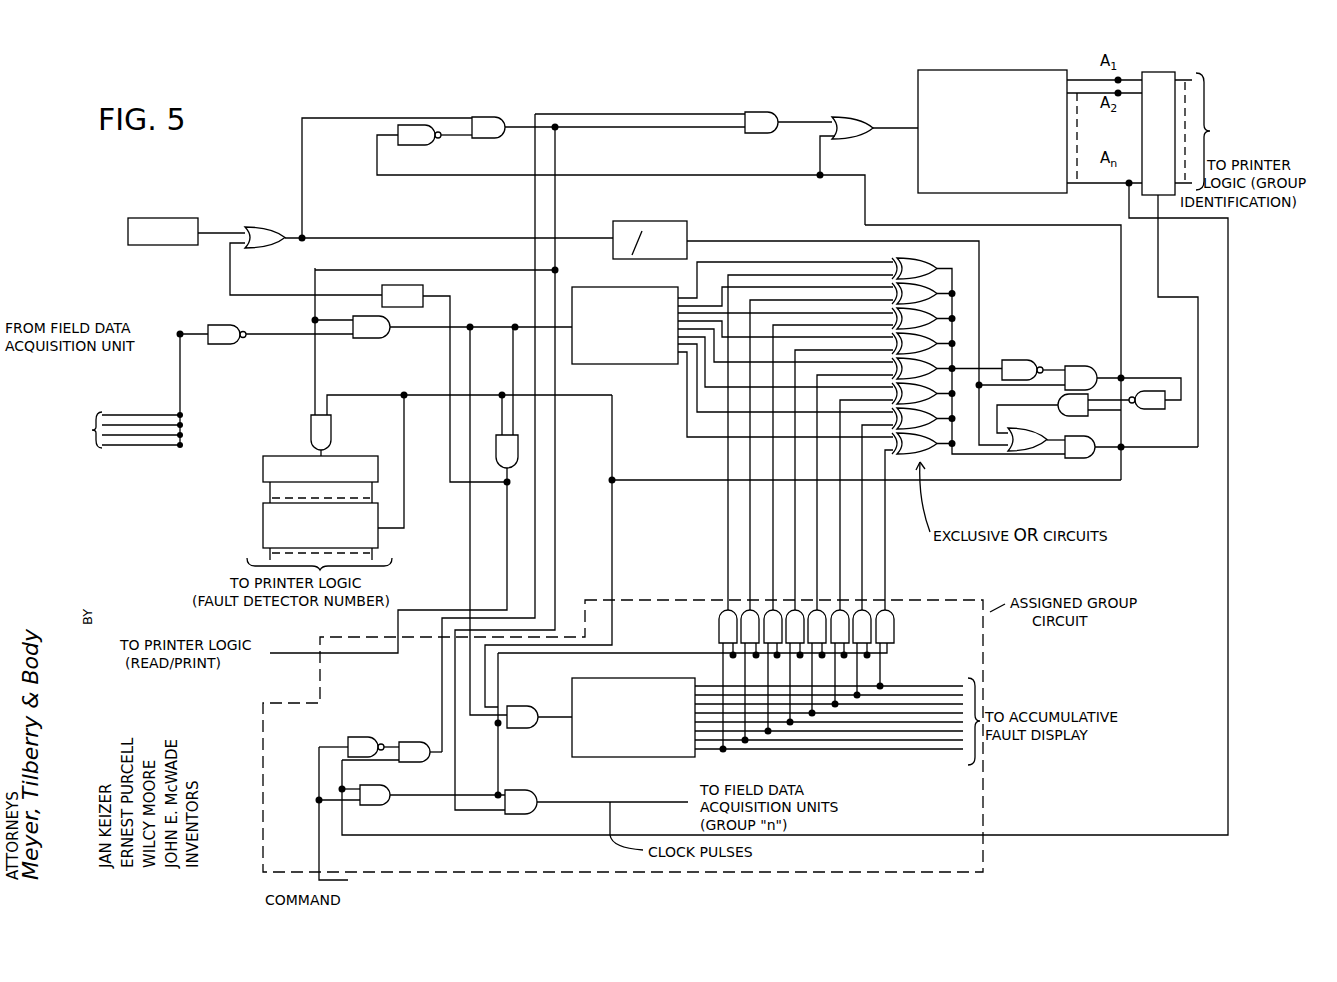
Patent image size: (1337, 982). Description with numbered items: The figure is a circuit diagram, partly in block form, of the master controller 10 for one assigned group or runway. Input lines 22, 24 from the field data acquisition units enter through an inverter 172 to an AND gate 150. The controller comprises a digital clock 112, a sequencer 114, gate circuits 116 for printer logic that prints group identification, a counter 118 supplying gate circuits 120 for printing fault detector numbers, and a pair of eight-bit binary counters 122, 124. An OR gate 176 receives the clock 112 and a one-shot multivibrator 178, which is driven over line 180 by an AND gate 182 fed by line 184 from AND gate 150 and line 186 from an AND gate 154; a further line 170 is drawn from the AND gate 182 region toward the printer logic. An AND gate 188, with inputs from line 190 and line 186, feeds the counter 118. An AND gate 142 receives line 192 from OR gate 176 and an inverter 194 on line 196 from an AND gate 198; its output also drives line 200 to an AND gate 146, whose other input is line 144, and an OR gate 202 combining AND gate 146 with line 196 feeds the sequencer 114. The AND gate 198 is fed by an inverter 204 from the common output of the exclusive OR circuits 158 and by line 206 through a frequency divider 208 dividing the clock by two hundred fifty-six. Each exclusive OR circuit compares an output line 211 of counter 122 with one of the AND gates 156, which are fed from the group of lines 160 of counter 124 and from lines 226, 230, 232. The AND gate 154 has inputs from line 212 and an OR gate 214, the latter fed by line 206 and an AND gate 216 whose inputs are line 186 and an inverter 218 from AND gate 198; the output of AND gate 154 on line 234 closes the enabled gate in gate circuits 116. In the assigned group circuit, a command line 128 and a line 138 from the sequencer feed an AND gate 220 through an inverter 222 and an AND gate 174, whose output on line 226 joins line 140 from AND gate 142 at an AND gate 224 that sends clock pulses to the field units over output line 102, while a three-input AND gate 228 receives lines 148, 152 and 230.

The master controller 10 is at (632, 100).
The input line 22 is at (187, 330).
The input line 24 is at (200, 343).
The output line 102 is at (664, 808).
The digital clock 112 is at (170, 214).
The sequencer 114 is at (1005, 70).
The gate circuits 116 is at (1175, 72).
The counter 118 is at (263, 472).
The gate circuits 120 is at (263, 532).
The eight-bit binary counter 122 is at (632, 366).
The eight-bit binary counter 124 is at (622, 758).
The command input line 128 is at (319, 800).
The line 138 is at (526, 835).
The line 140 is at (557, 376).
The AND gate 142 is at (490, 117).
The line 144 is at (625, 114).
The AND gate 146 is at (770, 112).
The line 148 is at (468, 580).
The AND gate 150 is at (378, 336).
The line 152 is at (613, 520).
The AND gate 154 is at (1100, 455).
The AND gates 156 is at (885, 568).
The exclusive OR gates 158 is at (943, 462).
The group of lines 160 is at (908, 760).
The line to printer logic (read/print) 170 is at (510, 528).
The inverter 172 is at (230, 344).
The AND gate 174 is at (376, 806).
The OR gate 176 is at (268, 230).
The one-shot multivibrator 178 is at (425, 295).
The input line 180 is at (448, 482).
The AND gate 182 is at (520, 456).
The line 184 is at (512, 384).
The line 186 is at (703, 480).
The AND gate 188 is at (311, 430).
The line 190 is at (557, 145).
The line 192 is at (385, 118).
The inverter 194 is at (420, 143).
The line 196 is at (1080, 226).
The AND gate 198 is at (1085, 372).
The line 200 is at (680, 127).
The OR gate 202 is at (855, 118).
The inverter 204 is at (1012, 360).
The line 206 is at (752, 241).
The frequency divider 208 is at (698, 222).
The output lines 211 is at (685, 432).
The line 212 is at (1040, 452).
The OR gate 214 is at (1092, 458).
The AND gate 216 is at (1068, 398).
The inverter 218 is at (1150, 406).
The AND gate 220 is at (412, 742).
The inverter 222 is at (358, 737).
The AND gate 224 is at (538, 800).
The line 226 is at (418, 797).
The three-input AND gate 228 is at (524, 728).
The line 230 is at (498, 776).
The line 232 is at (672, 653).
The output line 234 is at (1198, 455).